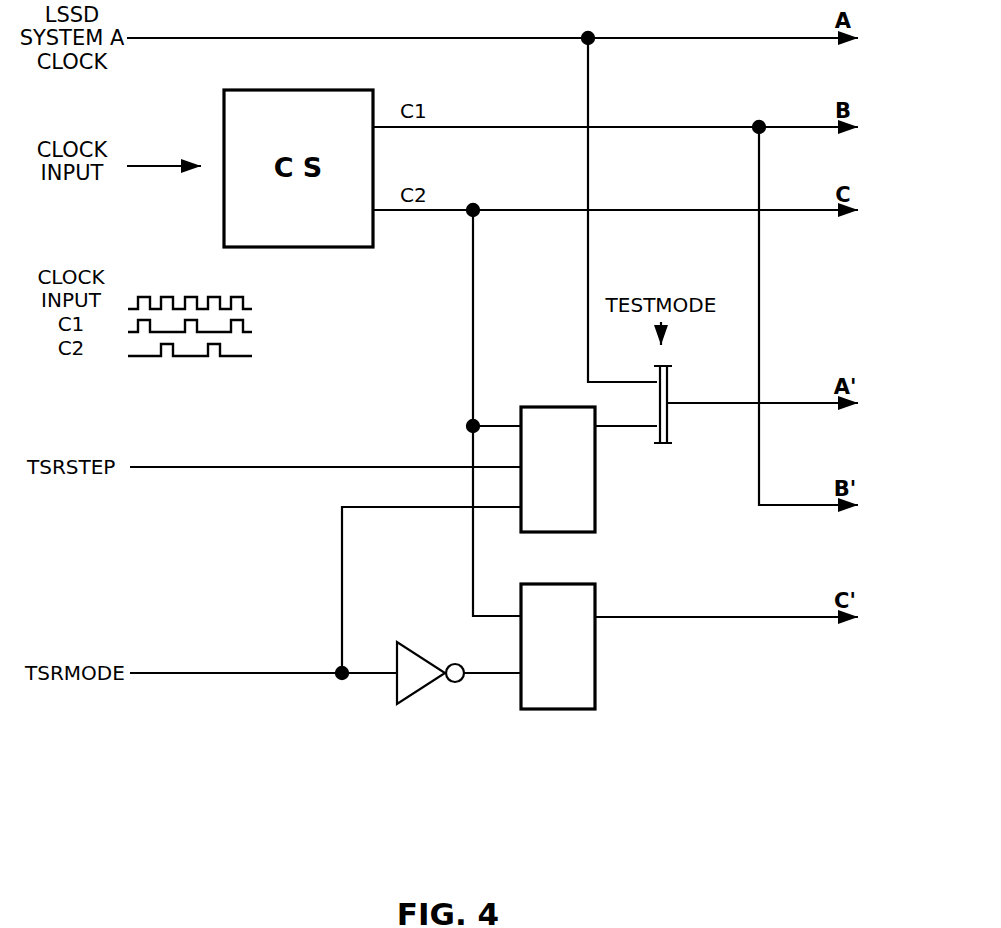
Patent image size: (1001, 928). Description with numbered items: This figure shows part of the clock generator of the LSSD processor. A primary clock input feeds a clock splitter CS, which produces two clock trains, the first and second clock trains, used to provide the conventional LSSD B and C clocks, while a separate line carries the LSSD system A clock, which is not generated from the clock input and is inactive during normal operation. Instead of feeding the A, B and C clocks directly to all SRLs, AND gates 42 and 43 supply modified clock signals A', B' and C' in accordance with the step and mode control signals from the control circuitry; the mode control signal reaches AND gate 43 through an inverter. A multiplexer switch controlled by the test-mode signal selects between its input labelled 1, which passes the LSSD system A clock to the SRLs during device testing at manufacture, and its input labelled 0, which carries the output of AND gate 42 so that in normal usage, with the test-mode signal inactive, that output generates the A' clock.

The AND gate 42 is at (547, 499).
The AND gate 43 is at (547, 674).
The multiplexer test-mode input 1 is at (636, 381).
The multiplexer normal-mode input 0 is at (639, 429).